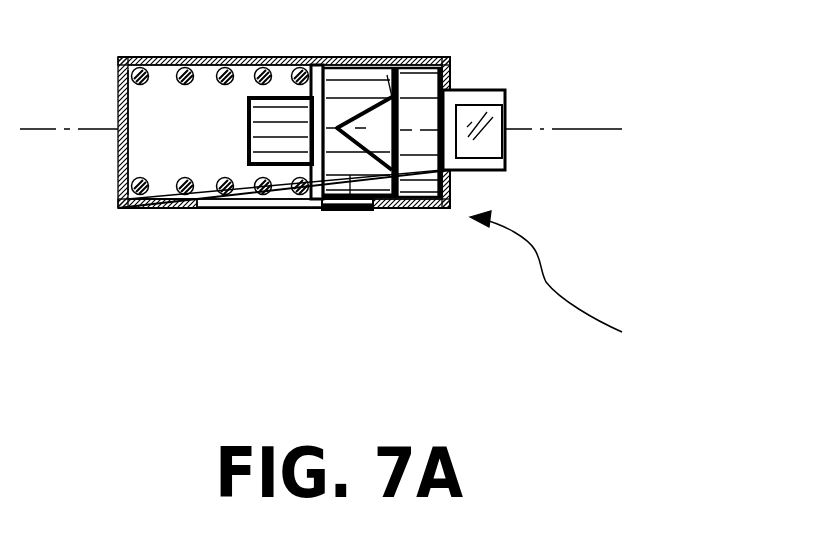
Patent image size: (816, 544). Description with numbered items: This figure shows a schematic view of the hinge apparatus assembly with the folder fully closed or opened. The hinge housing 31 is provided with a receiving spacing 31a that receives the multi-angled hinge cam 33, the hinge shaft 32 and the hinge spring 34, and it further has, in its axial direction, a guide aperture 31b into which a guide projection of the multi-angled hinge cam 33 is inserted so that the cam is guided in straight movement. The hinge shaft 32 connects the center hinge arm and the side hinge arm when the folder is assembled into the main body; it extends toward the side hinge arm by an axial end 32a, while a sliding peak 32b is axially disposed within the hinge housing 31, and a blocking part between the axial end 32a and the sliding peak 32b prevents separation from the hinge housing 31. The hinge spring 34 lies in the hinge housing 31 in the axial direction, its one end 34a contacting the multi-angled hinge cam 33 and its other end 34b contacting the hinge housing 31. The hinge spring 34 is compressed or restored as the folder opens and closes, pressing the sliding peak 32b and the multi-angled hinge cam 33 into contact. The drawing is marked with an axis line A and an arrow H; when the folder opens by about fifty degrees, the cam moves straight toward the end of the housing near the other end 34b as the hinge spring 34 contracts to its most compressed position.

The hinge housing 31 is at (118, 183).
The receiving spacing 31a is at (140, 110).
The guide aperture 31b is at (250, 203).
The hinge shaft 32 is at (427, 93).
The axial end 32a is at (505, 147).
The sliding peak 32b is at (380, 127).
The multi-angled hinge cam 33 is at (352, 204).
The hinge spring 34 is at (205, 202).
The one end of the hinge spring 34a is at (294, 200).
The other end of the hinge spring 34b is at (135, 206).
The axis A is at (558, 128).
The direction of movement H is at (556, 279).